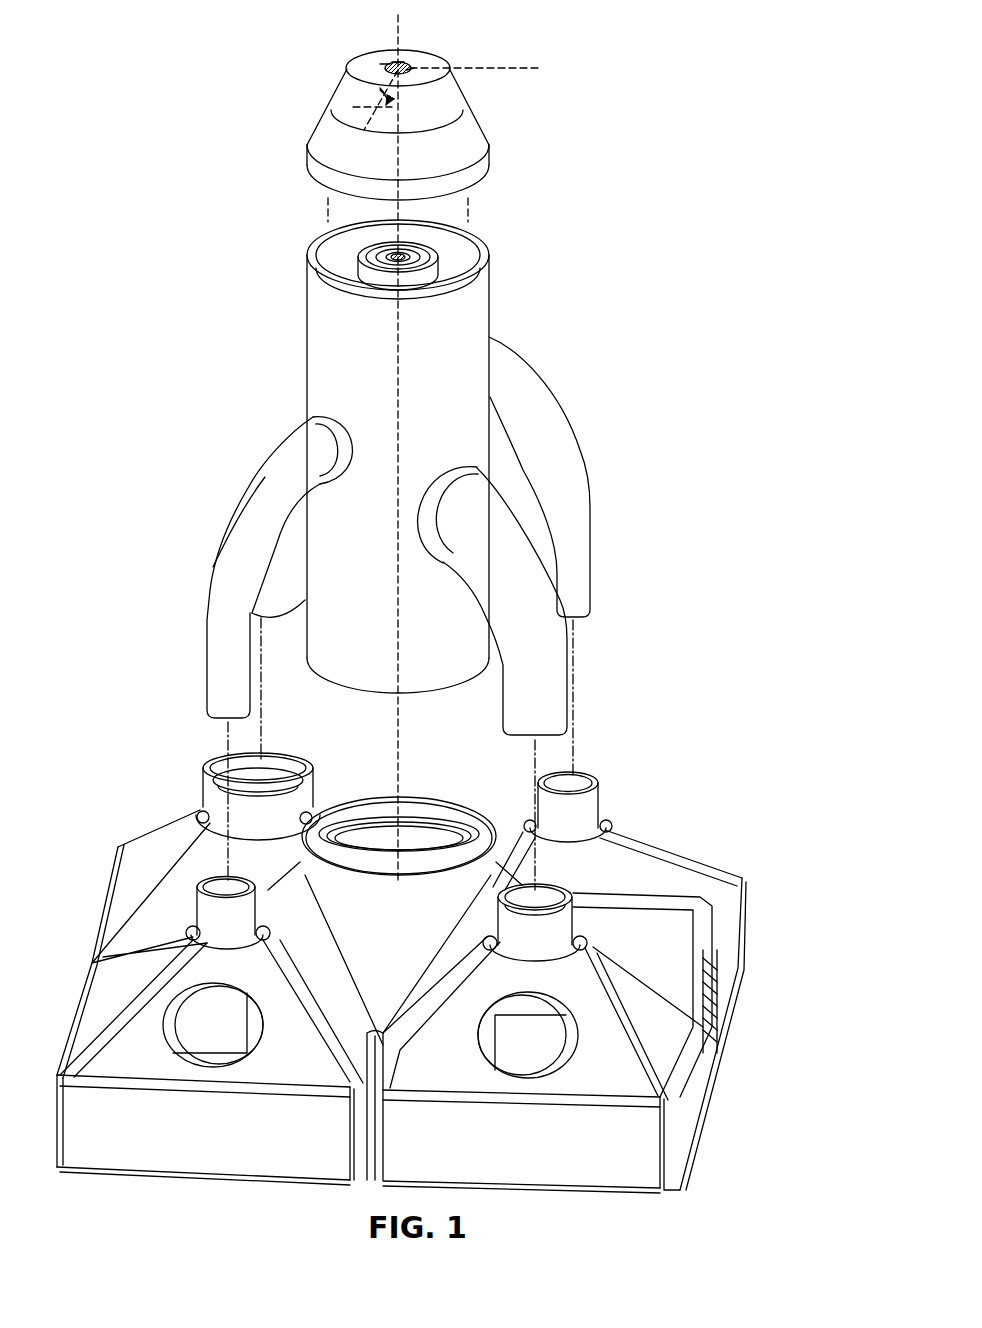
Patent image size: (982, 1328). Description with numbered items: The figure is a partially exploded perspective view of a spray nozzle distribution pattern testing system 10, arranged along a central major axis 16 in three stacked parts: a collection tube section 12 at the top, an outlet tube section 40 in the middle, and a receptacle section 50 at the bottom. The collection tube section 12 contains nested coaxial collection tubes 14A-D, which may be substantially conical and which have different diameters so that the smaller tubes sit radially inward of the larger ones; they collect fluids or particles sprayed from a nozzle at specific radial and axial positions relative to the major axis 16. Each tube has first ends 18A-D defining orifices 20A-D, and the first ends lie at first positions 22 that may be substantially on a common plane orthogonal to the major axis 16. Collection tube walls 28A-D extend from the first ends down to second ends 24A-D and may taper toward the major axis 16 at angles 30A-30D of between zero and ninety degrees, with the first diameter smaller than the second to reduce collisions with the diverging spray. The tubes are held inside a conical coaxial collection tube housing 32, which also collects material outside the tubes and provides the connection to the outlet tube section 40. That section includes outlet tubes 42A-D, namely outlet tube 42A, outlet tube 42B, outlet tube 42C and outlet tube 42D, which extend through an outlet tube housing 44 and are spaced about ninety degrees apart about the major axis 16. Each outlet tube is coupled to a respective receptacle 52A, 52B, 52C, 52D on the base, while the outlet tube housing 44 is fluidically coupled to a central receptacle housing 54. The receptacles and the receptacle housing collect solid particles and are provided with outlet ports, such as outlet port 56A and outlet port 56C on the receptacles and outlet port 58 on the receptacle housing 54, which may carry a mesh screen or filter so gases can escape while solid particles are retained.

The spray nozzle distribution pattern testing system 10 is at (749, 58).
The collection tube section 12 is at (190, 52).
The coaxial collection tubes 14A-D is at (386, 61).
The major axis 16 is at (398, 56).
The first ends 18A-D is at (406, 60).
The orifices 20A-D is at (411, 66).
The first positions 22 is at (540, 68).
The second ends 24A-D is at (383, 199).
The collection tube walls 28A-D is at (388, 76).
The angles 30A-30D is at (389, 105).
The coaxial collection tube housing 32 is at (490, 152).
The outlet tube section 40 is at (190, 217).
The outlet tube 42A is at (223, 610).
The outlet tube 42B is at (557, 424).
The outlet tube 42C is at (560, 658).
The outlet tube 42D is at (238, 508).
The outlet tubes 42A-D is at (356, 243).
The outlet tube housing 44 is at (489, 273).
The base 50 is at (715, 741).
The receptacle 52A is at (255, 893).
The receptacle 52B is at (590, 782).
The receptacle 52C is at (567, 895).
The receptacle 52D is at (305, 760).
The receptacle housing 54 is at (445, 806).
The outlet port 56A is at (250, 1003).
The outlet port 56C is at (565, 1017).
The outlet port 58 is at (710, 1030).